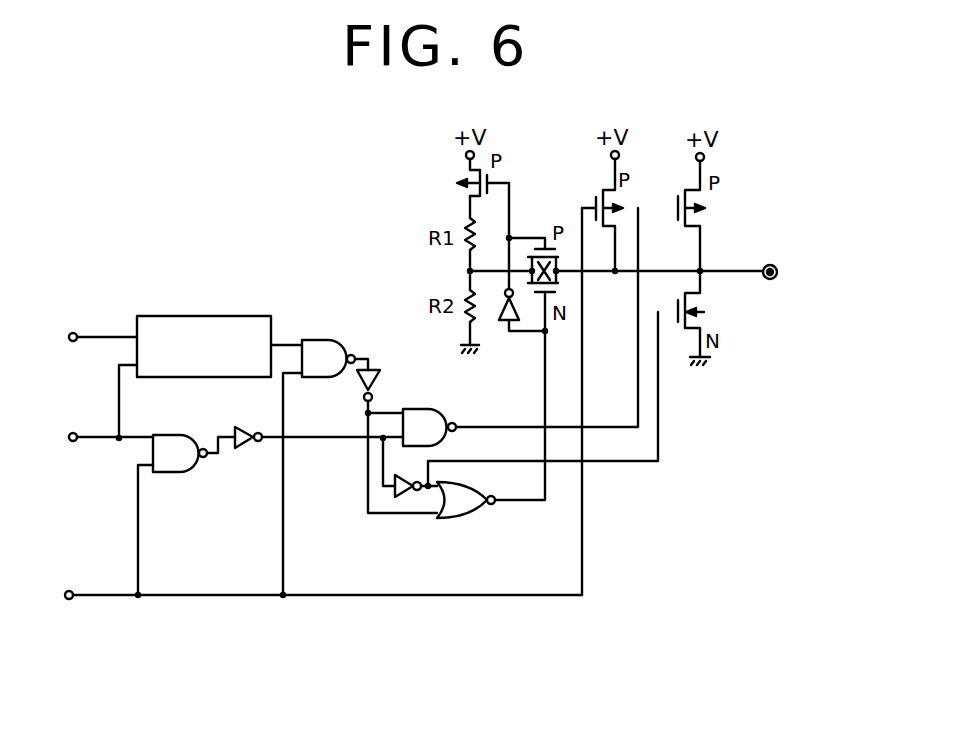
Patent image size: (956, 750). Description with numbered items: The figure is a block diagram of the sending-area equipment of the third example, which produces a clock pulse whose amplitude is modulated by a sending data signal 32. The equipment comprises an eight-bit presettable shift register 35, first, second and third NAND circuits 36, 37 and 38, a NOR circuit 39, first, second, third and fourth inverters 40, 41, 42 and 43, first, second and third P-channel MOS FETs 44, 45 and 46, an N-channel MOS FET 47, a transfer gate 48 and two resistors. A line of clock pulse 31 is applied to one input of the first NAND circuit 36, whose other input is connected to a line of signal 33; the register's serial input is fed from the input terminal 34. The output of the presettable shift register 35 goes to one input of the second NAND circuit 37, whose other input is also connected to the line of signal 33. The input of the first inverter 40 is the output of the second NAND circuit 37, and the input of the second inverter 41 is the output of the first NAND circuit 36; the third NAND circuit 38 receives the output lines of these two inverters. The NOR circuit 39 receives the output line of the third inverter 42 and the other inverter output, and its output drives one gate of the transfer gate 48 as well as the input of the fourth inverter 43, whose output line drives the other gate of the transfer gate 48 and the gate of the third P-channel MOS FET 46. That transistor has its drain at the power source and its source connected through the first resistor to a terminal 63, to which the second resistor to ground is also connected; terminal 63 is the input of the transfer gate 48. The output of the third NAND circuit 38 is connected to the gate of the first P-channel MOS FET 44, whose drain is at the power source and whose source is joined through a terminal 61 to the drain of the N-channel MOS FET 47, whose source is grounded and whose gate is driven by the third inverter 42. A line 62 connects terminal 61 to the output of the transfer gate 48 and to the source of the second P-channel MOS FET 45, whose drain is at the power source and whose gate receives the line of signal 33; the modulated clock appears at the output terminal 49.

The clock pulse 31 is at (95, 440).
The sending data signal 32 is at (280, 343).
The signal 33 is at (98, 597).
The serial data input terminal 34 is at (107, 334).
The presettable shift register 35 is at (212, 316).
The first NAND circuit 36 is at (170, 437).
The second NAND circuit 37 is at (317, 340).
The third NAND circuit 38 is at (440, 408).
The NOR circuit 39 is at (458, 518).
The first inverter 40 is at (377, 368).
The second inverter 41 is at (242, 431).
The third inverter 42 is at (403, 497).
The fourth inverter 43 is at (500, 321).
The first P-channel MOS FET 44 is at (712, 199).
The second P-channel MOS FET 45 is at (597, 190).
The third P-channel MOS FET 46 is at (456, 183).
The N-channel MOS FET 47 is at (708, 304).
The transfer gate 48 is at (558, 273).
The output terminal 49 is at (777, 272).
The terminal 61 is at (703, 268).
The line 62 is at (660, 268).
The terminal 63 is at (467, 271).